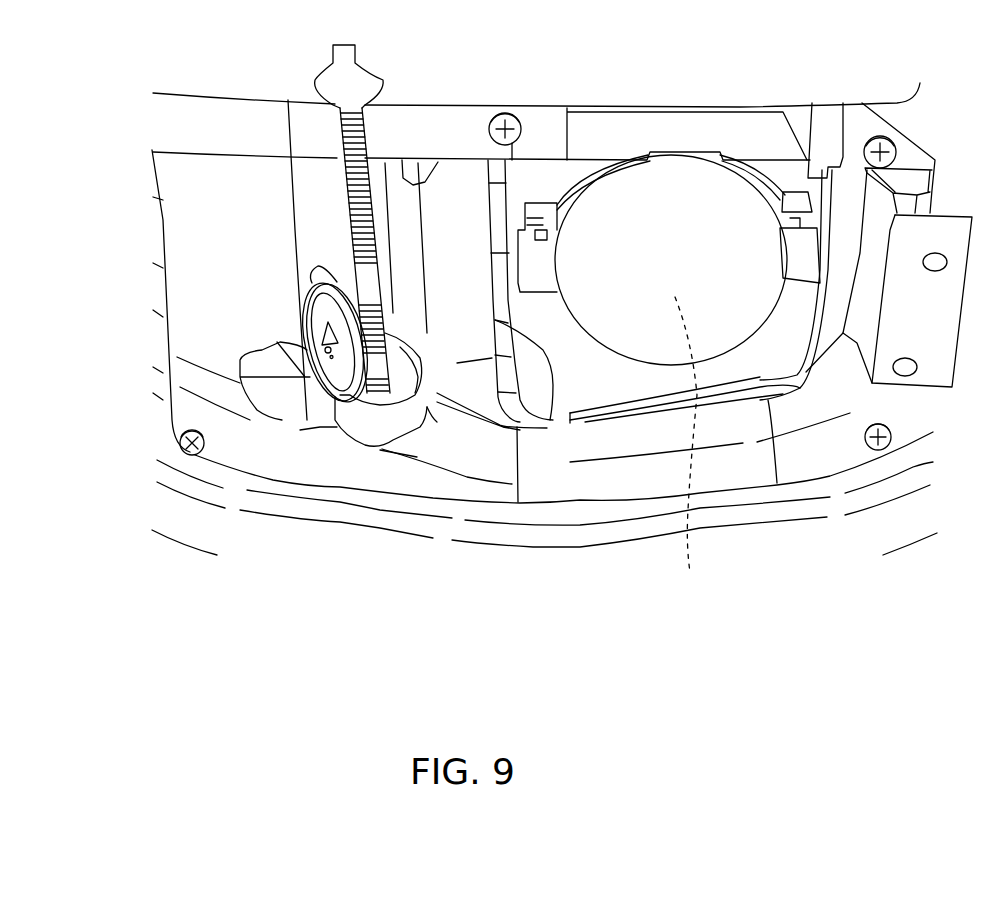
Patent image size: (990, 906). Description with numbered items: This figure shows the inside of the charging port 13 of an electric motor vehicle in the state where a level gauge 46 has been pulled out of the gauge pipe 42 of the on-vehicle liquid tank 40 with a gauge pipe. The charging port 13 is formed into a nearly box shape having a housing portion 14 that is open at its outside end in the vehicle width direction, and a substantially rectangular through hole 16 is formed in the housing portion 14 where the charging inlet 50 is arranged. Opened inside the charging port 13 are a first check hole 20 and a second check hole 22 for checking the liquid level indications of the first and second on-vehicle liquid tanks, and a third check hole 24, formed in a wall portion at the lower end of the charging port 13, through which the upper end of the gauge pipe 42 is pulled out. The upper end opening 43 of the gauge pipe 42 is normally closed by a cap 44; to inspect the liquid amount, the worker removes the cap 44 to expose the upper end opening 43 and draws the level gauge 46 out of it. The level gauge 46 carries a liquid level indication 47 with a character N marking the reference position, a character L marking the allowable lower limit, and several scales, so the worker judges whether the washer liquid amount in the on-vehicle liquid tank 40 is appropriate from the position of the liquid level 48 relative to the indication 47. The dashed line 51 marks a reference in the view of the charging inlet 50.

The charging port 13 is at (327, 230).
The housing portion 14 is at (453, 193).
The through hole 16 is at (553, 400).
The first check hole 20 is at (612, 130).
The second check hole 22 is at (922, 195).
The third check hole 24 is at (365, 438).
The on-vehicle liquid tank with a gauge pipe 40 is at (353, 420).
The gauge pipe 42 is at (397, 420).
The upper end opening 43 is at (422, 410).
The cap 44 is at (305, 314).
The level gauge 46 is at (334, 64).
The liquid level indication 47 is at (388, 292).
The liquid level 48 is at (350, 222).
The charging inlet 50 is at (640, 327).
The axis line 51 is at (689, 452).